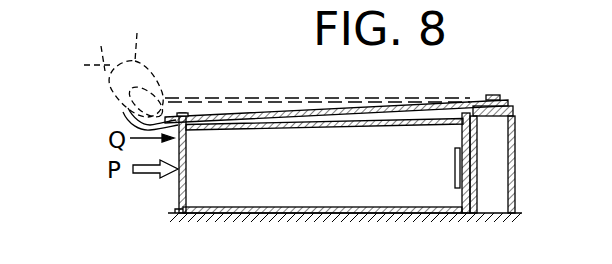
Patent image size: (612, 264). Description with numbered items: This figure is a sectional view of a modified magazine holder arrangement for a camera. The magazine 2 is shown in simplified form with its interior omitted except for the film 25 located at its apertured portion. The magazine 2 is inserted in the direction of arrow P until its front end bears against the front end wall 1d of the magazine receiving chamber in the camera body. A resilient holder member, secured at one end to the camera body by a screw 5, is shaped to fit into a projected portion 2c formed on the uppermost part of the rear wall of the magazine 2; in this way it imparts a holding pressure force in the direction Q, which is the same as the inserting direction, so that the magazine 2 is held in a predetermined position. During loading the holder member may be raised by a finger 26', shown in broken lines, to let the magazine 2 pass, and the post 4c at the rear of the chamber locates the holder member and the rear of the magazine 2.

The magazine 2 is at (297, 129).
The projected portion 2c is at (137, 112).
The clamp post 4c is at (182, 113).
The front end wall 1d is at (477, 127).
The screw 5 is at (491, 94).
The film 25 is at (456, 165).
The finger 26' is at (110, 78).